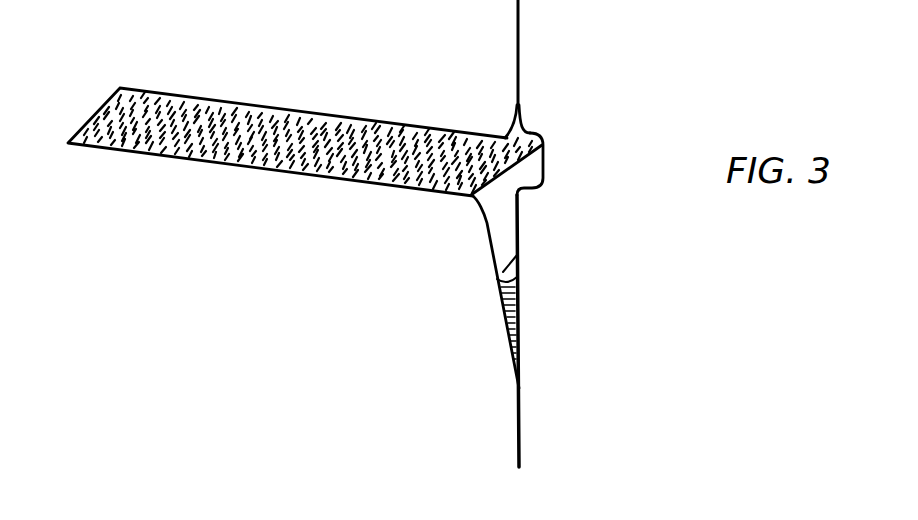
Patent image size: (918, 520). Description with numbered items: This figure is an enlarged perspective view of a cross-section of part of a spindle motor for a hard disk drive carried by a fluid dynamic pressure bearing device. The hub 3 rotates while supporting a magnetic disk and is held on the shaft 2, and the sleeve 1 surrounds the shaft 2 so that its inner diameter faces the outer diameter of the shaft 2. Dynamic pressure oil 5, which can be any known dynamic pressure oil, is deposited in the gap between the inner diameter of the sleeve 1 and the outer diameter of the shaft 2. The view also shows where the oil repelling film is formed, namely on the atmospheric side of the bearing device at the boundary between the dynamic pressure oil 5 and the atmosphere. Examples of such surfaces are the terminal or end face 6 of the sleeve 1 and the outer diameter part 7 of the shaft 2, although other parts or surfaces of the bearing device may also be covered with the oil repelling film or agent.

The sleeve 1 is at (345, 355).
The shaft 2 is at (623, 297).
The hub 3 is at (380, 53).
The dynamic pressure oil 5 is at (497, 298).
The end face of sleeve 6 is at (377, 186).
The outer diameter part of shaft 7 is at (545, 177).